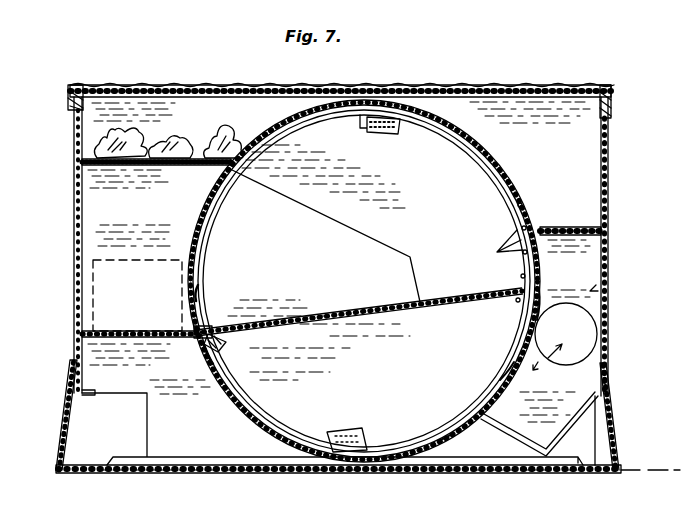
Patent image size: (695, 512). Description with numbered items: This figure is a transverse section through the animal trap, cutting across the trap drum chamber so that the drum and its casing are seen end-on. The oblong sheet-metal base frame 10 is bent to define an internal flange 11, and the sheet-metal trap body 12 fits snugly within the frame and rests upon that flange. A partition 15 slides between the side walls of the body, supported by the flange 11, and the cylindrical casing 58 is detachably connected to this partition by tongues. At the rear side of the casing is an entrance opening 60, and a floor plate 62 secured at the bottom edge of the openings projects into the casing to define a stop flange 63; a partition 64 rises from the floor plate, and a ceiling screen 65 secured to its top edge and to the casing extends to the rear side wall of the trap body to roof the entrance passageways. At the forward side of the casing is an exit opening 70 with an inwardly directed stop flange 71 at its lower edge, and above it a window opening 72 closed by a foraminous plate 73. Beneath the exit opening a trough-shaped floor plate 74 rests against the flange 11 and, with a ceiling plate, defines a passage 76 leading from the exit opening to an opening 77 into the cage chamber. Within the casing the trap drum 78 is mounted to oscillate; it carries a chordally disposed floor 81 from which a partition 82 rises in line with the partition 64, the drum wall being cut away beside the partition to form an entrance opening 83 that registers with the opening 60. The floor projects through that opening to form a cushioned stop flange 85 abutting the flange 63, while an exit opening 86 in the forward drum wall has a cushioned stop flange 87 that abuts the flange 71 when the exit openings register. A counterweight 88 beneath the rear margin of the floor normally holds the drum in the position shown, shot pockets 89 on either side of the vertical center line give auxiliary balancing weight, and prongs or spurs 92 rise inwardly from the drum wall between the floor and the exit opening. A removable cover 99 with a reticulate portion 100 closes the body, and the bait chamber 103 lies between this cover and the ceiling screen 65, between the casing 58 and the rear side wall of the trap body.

The base frame 10 is at (68, 430).
The internal flange 11 is at (85, 393).
The trap body 12 is at (607, 190).
The partition 15 is at (548, 228).
The cylindrical casing 58 is at (450, 437).
The entrance opening 60 is at (196, 300).
The floor plate 62 is at (150, 328).
The stop flange 63 is at (222, 340).
The partition 64 is at (97, 208).
The ceiling screen 65 is at (78, 160).
The exit opening 70 is at (541, 300).
The stop flange 71 is at (514, 362).
The window opening 72 is at (505, 175).
The foraminous plate 73 is at (480, 156).
The trough-shaped floor plate 74 is at (553, 432).
The passage 76 is at (590, 291).
The opening 77 is at (600, 320).
The trap drum 78 is at (430, 120).
The floor 81 is at (433, 305).
The partition 82 is at (380, 252).
The entrance opening 83 is at (199, 296).
The stop flange 85 is at (200, 320).
The exit opening 86 is at (481, 147).
The stop flange 87 is at (503, 200).
The counterweight 88 is at (210, 352).
The shot pockets 89 is at (376, 134).
The prongs or spurs 92 is at (496, 250).
The cover 99 is at (560, 88).
The reticulate portion 100 is at (474, 88).
The bait chamber 103 is at (138, 115).